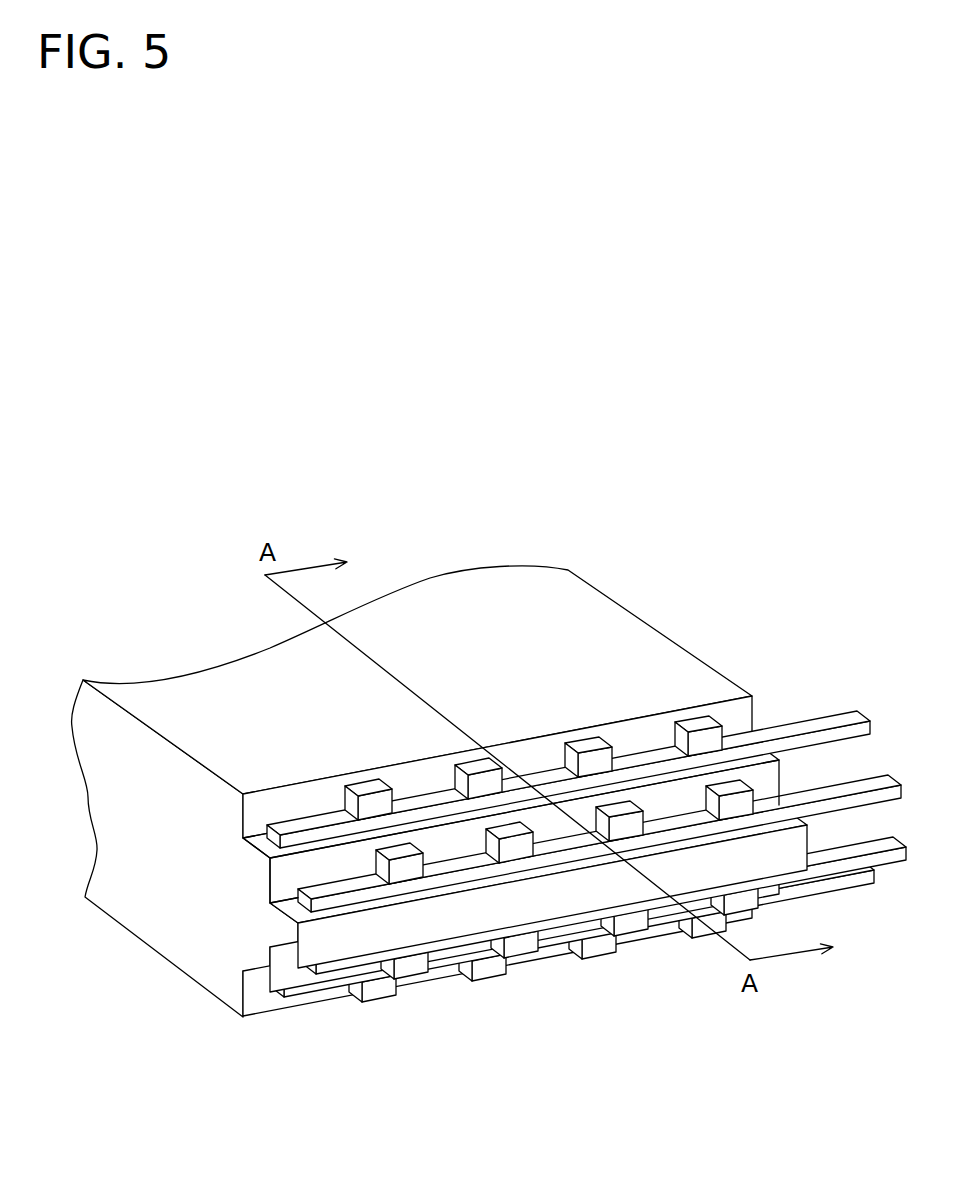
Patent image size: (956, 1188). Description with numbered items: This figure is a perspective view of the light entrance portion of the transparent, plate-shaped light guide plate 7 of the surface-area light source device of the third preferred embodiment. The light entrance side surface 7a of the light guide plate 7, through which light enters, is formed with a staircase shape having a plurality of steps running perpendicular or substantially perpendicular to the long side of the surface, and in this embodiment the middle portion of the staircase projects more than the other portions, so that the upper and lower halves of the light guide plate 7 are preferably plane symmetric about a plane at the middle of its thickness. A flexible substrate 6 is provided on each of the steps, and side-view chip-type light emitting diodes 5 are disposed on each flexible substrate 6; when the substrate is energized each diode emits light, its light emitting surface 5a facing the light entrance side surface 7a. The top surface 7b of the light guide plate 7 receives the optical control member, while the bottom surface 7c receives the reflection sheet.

The light emitting diode 5 is at (292, 844).
The light emitting surface 5a is at (341, 797).
The flexible substrate 6 is at (843, 713).
The light guide plate 7 is at (489, 824).
The light entrance side surface 7a is at (548, 832).
The top surface 7b is at (585, 640).
The bottom surface 7c is at (197, 982).